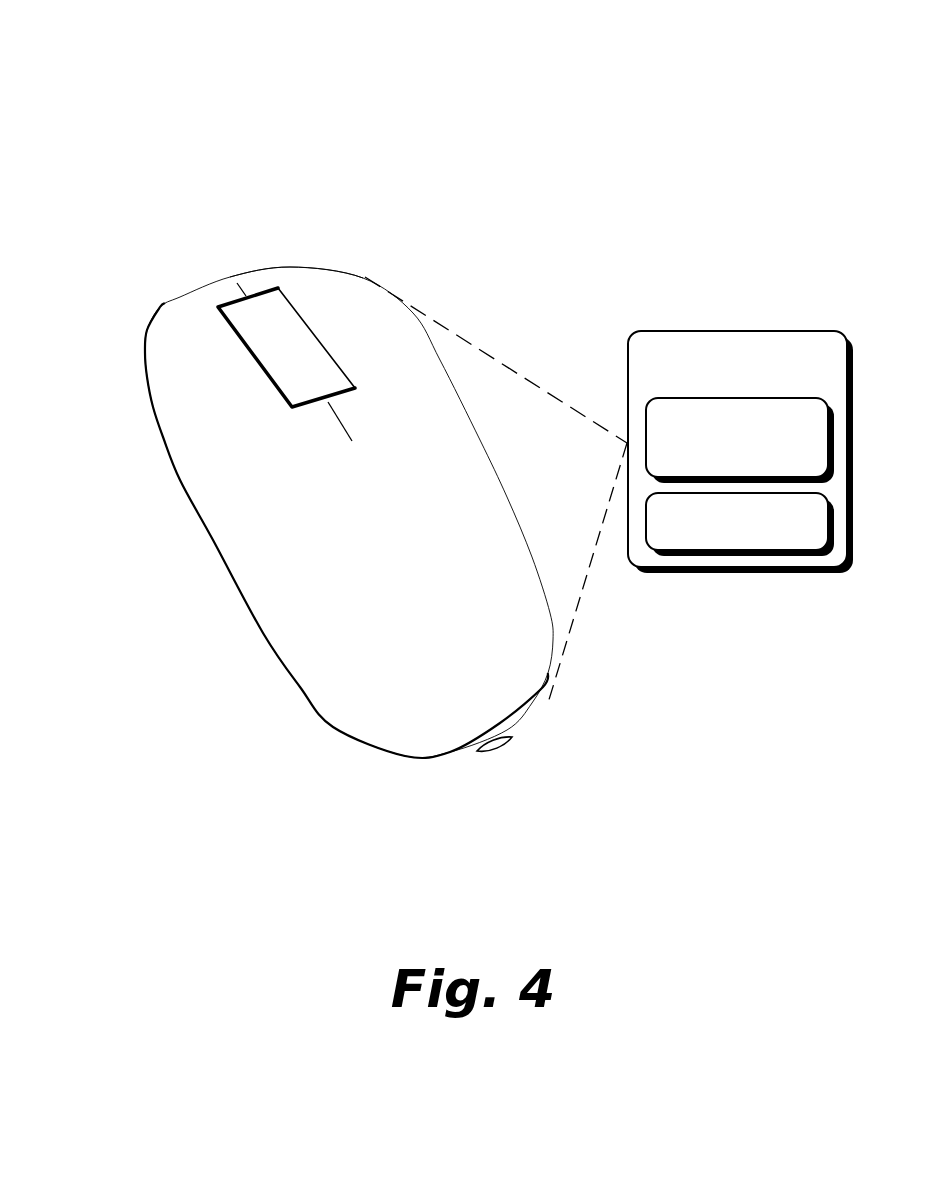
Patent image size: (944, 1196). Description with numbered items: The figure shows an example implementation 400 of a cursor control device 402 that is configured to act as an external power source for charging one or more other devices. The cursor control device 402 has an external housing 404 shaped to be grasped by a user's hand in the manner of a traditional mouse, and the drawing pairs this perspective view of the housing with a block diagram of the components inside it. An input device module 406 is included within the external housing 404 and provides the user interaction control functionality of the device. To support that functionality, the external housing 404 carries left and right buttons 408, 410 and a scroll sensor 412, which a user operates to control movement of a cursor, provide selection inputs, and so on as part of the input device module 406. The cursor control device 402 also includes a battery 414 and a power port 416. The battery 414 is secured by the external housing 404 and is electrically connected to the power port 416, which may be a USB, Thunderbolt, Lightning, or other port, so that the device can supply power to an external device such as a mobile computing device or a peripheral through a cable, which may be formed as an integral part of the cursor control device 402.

The example implementation 400 is at (170, 115).
The cursor control device 402 is at (797, 392).
The external housing 404 is at (216, 581).
The input device module 406 is at (800, 461).
The left button 408 is at (180, 312).
The right button 410 is at (310, 272).
The scroll sensor 412 is at (312, 372).
The battery 414 is at (800, 534).
The power port 416 is at (488, 760).